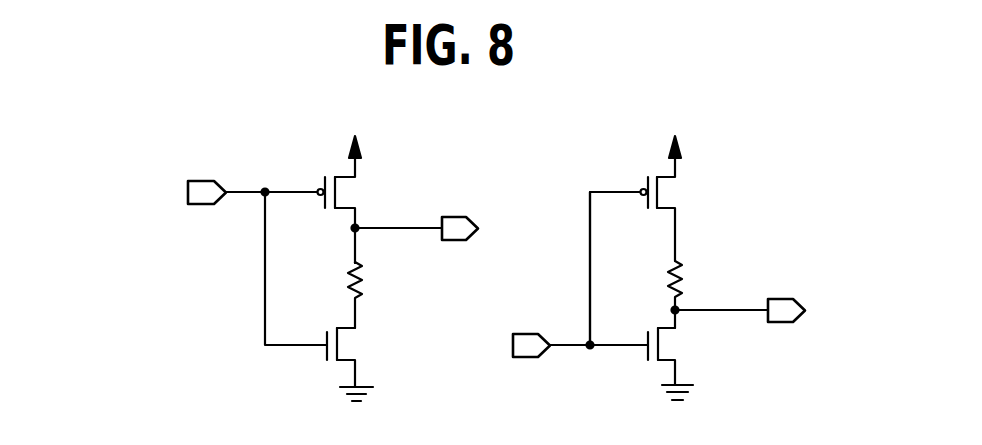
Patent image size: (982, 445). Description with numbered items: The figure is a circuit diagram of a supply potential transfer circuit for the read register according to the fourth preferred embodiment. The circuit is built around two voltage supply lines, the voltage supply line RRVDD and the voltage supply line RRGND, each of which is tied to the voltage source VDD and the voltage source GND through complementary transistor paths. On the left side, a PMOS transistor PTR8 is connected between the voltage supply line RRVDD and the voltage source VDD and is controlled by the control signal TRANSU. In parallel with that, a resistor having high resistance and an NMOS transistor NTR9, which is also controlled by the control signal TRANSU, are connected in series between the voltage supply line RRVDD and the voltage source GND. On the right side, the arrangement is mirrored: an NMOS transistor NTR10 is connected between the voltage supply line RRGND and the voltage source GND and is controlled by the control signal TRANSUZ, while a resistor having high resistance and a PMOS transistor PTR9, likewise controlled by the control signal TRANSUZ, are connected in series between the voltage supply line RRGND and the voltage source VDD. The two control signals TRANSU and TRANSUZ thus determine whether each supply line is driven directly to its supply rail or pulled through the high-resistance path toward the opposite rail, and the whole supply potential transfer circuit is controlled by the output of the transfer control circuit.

The PMOS transistor PTR8 is at (383, 205).
The PMOS transistor PTR9 is at (702, 204).
The NMOS transistor NTR9 is at (296, 359).
The NMOS transistor NTR10 is at (712, 356).
The control signal TRANSU is at (192, 260).
The control signal TRANSUZ is at (510, 279).
The voltage supply line RRVDD is at (466, 228).
The voltage supply line RRGND is at (793, 311).
The voltage source VDD is at (514, 127).
The voltage source GND is at (549, 406).